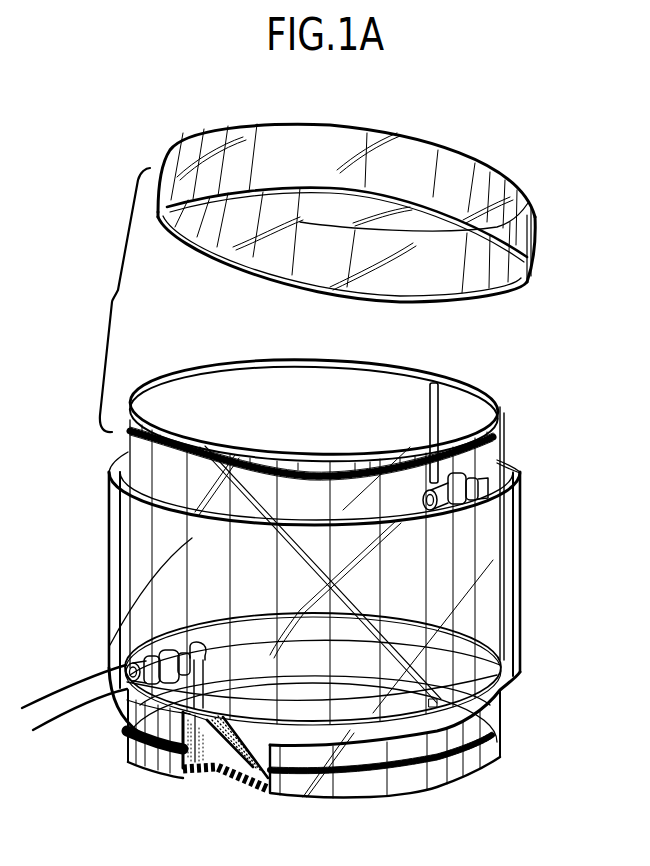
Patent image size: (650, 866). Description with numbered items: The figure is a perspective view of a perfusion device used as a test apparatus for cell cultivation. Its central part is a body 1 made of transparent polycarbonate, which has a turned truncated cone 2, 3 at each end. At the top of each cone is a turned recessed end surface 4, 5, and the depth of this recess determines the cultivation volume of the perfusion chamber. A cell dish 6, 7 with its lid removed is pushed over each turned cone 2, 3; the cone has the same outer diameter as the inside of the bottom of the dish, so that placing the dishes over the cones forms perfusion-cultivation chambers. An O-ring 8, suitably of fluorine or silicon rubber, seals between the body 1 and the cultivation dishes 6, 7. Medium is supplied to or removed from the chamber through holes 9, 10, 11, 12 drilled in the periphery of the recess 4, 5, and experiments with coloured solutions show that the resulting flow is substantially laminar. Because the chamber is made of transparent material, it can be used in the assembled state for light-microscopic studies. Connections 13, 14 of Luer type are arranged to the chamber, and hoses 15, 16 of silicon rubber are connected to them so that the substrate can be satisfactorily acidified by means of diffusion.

The body 1 is at (123, 553).
The turned truncated cone 2 is at (500, 460).
The turned truncated cone 3 is at (482, 706).
The recessed end surface 4 is at (407, 370).
The recessed end surface 5 is at (254, 782).
The cell dish 6 is at (533, 230).
The cell dish 7 is at (210, 777).
The O-ring 8 is at (487, 453).
The hole 9 is at (192, 780).
The hole 10 is at (490, 756).
The hole 11 is at (203, 441).
The hole 12 is at (440, 375).
The Luer type connection 13 is at (450, 500).
The Luer type connection 14 is at (197, 648).
The hose 15 is at (500, 468).
The hose 16 is at (77, 693).